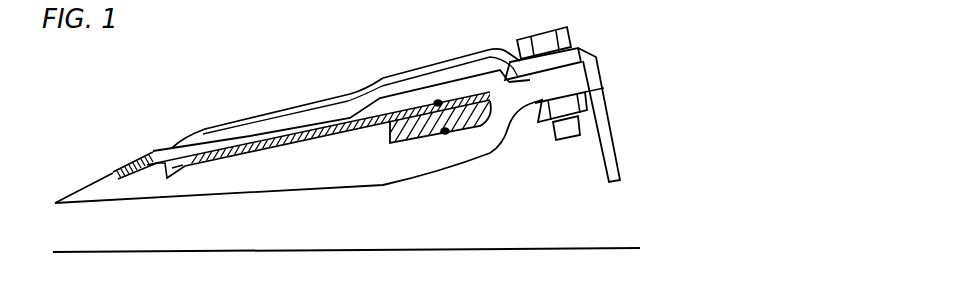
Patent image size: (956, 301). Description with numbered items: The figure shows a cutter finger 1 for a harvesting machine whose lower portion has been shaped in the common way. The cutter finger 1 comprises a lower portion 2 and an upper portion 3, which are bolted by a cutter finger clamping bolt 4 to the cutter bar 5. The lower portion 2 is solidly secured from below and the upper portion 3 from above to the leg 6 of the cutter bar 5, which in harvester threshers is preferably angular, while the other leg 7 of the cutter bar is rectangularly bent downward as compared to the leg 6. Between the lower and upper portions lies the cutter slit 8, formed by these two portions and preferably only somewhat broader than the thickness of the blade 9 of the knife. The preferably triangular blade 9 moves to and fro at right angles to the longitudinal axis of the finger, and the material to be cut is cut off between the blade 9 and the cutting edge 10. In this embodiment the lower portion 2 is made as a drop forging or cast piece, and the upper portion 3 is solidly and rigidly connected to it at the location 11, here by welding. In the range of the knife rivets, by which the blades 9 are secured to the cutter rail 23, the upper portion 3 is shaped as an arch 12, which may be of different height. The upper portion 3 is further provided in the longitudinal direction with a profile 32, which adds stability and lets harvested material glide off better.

The cutter finger 1 is at (219, 112).
The lower portion of the cutter finger 2 is at (273, 172).
The upper portion of the cutter finger 3 is at (281, 128).
The cutter finger clamping bolt 4 is at (562, 37).
The cutter bar 5 is at (598, 76).
The leg of cutter bar 6 is at (568, 73).
The leg of the cutter bar 7 is at (616, 146).
The cutter slit 8 is at (173, 171).
The blade 9 is at (351, 118).
The cutting edge 10 is at (334, 142).
The location 11 is at (128, 160).
The arch 12 is at (452, 78).
The cutter rail 23 is at (469, 113).
The profile 32 is at (370, 80).